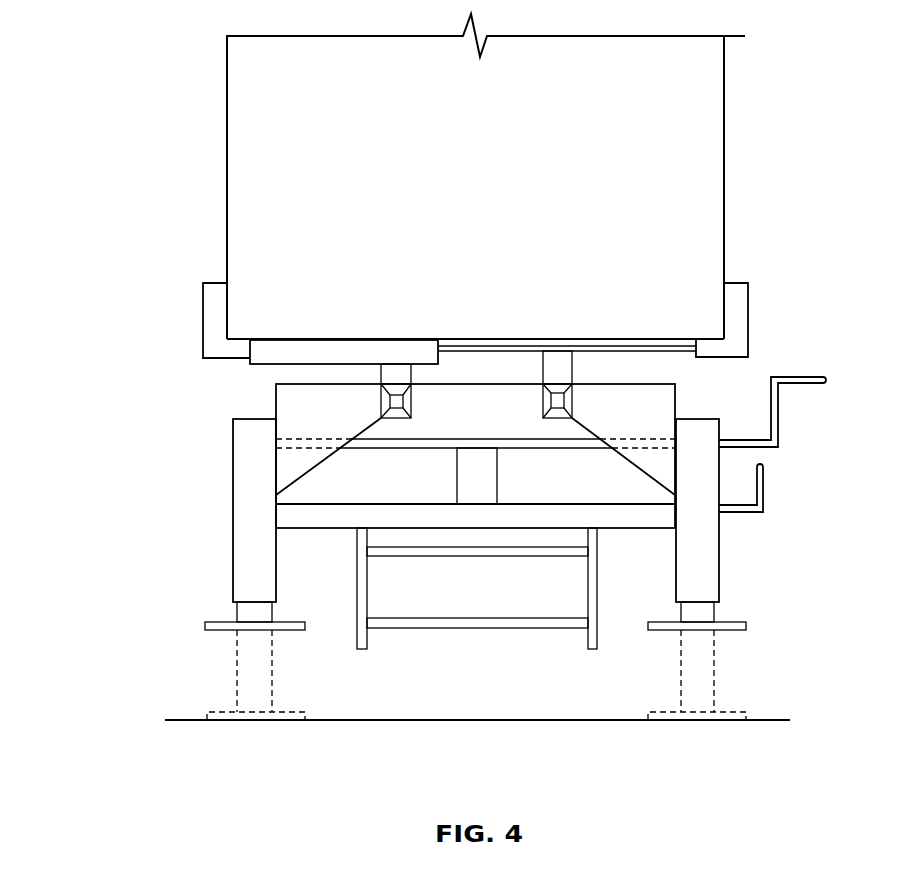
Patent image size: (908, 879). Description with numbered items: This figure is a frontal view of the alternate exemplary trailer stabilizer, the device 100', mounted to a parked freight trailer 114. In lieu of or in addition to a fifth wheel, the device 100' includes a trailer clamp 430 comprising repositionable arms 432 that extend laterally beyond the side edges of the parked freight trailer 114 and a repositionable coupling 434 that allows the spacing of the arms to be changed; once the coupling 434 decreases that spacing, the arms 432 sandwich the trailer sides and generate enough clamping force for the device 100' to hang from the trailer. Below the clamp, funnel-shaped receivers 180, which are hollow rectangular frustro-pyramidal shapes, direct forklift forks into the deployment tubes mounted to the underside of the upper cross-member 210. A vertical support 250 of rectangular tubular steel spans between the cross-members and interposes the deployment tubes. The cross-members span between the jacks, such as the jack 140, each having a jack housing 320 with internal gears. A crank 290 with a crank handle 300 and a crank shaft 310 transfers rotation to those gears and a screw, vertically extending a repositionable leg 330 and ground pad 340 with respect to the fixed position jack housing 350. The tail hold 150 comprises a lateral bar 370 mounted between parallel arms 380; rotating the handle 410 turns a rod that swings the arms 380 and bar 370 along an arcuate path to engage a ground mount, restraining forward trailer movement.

The parked freight trailer 114 is at (497, 198).
The repositionable arms 432 is at (218, 320).
The repositionable coupling 434 is at (347, 348).
The trailer clamp 430 is at (437, 337).
The funnel-shaped receivers 180 is at (565, 396).
The fixed position jack housing 350 is at (248, 515).
The crank shaft 310 is at (409, 445).
The vertical support 250 is at (488, 468).
The upper cross-member 210 is at (591, 443).
The jack housings 320 is at (250, 430).
The repositionable jack 140 is at (707, 575).
The repositionable leg 330 is at (238, 612).
The ground pad 340 is at (748, 627).
The parallel arms 380 is at (355, 633).
The lateral bar 370 is at (507, 628).
The tail hold 150 is at (465, 548).
The crank 290 is at (781, 418).
The crank handle 300 is at (797, 378).
The handle 410 is at (766, 492).
The alternate exemplary device 100' is at (415, 625).